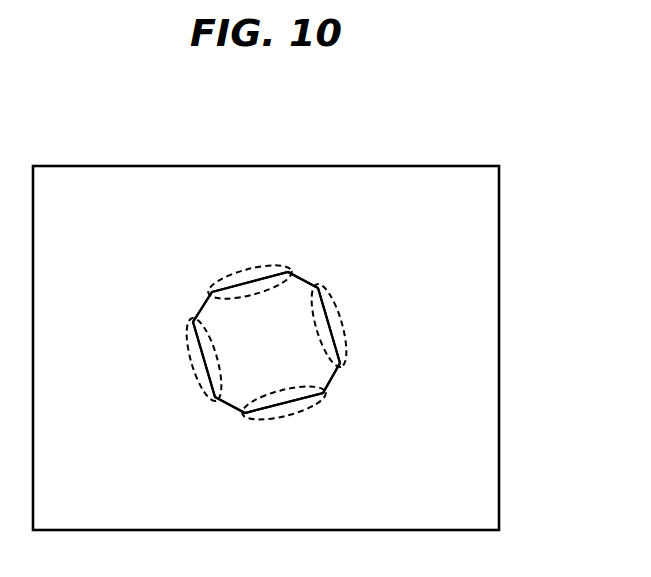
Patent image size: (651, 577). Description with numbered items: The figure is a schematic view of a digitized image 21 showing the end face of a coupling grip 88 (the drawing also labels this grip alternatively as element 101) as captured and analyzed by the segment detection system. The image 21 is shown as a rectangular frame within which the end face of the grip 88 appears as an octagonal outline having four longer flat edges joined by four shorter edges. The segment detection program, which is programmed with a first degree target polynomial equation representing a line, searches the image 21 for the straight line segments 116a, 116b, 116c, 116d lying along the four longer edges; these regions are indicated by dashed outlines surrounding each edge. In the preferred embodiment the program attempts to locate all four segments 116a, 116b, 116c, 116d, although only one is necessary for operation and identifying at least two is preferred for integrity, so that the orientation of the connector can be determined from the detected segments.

The image 21 is at (499, 285).
The coupling grip 88 is at (239, 284).
The polygonal component (octagonal cross-section) 101 is at (266, 342).
The straight line segment 116a is at (192, 362).
The straight line segment 116b is at (303, 413).
The straight line segment 116c is at (342, 311).
The straight line segment 116d is at (267, 263).